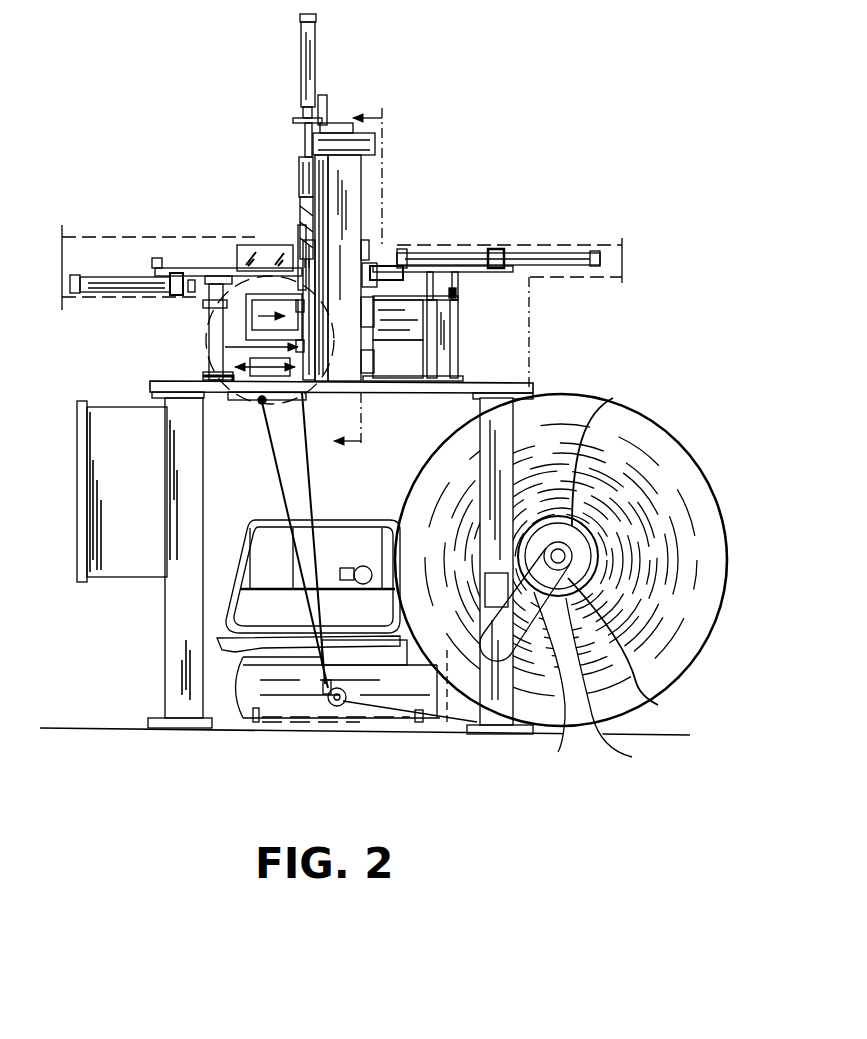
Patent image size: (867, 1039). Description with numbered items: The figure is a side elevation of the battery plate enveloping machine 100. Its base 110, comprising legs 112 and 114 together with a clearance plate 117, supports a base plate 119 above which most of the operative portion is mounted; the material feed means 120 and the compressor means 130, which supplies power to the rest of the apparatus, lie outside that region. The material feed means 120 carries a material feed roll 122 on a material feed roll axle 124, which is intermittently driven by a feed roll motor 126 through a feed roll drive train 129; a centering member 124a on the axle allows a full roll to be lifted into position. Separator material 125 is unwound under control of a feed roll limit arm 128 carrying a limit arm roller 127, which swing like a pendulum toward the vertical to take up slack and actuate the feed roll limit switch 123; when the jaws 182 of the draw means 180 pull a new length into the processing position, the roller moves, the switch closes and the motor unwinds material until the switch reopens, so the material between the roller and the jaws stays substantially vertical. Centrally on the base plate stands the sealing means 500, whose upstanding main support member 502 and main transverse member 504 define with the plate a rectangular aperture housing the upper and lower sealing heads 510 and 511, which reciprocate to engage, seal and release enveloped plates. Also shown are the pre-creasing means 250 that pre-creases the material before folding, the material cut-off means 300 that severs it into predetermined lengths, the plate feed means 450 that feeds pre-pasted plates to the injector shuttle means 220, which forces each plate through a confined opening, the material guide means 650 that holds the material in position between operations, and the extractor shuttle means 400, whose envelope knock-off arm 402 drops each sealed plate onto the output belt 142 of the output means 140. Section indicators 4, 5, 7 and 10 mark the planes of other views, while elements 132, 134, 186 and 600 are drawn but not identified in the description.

The battery plate enveloping machine 100 is at (497, 178).
The label web arm 10 is at (558, 242).
The section line 4 is at (153, 235).
The support column / detail 5 is at (207, 353).
The section line 7 is at (356, 281).
The base 110 is at (164, 632).
The leg 112 is at (180, 675).
The leg 114 is at (480, 425).
The clearance plate 117 is at (121, 558).
The base plate 119 is at (387, 395).
The material feed means 120 is at (706, 647).
The material feed roll 122 is at (692, 478).
The feed roll limit switch 123 is at (262, 405).
The material feed roll axle 124 is at (610, 400).
The centering member 124a is at (658, 705).
The separator material 125 is at (317, 515).
The feed roll motor 126 is at (541, 681).
The limit arm roller 127 is at (345, 710).
The feed roll limit arm 128 is at (292, 463).
The feed roll drive train 129 is at (603, 679).
The compressor means 130 is at (234, 726).
The drive unit 132 is at (293, 707).
The tray frame 134 is at (271, 515).
The output means 140 is at (410, 343).
The output belt 142 is at (423, 318).
The draw means 180 is at (298, 161).
The jaws 182 is at (301, 193).
The vertical actuator rod 186 is at (314, 48).
The injector shuttle means 220 is at (140, 271).
The pre-creasing means 250 is at (240, 368).
The material cut-off means 300 is at (255, 298).
The extractor shuttle means 400 is at (398, 251).
The envelope knock-off arm 402 is at (458, 293).
The plate feed means 450 is at (250, 243).
The sealing means 500 is at (364, 245).
The main support member 502 is at (365, 170).
The main transverse member 504 is at (373, 142).
The upper sealing head 510 is at (368, 252).
The lower sealing head 511 is at (383, 268).
The transfer mechanism 600 is at (302, 245).
The material guide means 650 is at (270, 346).